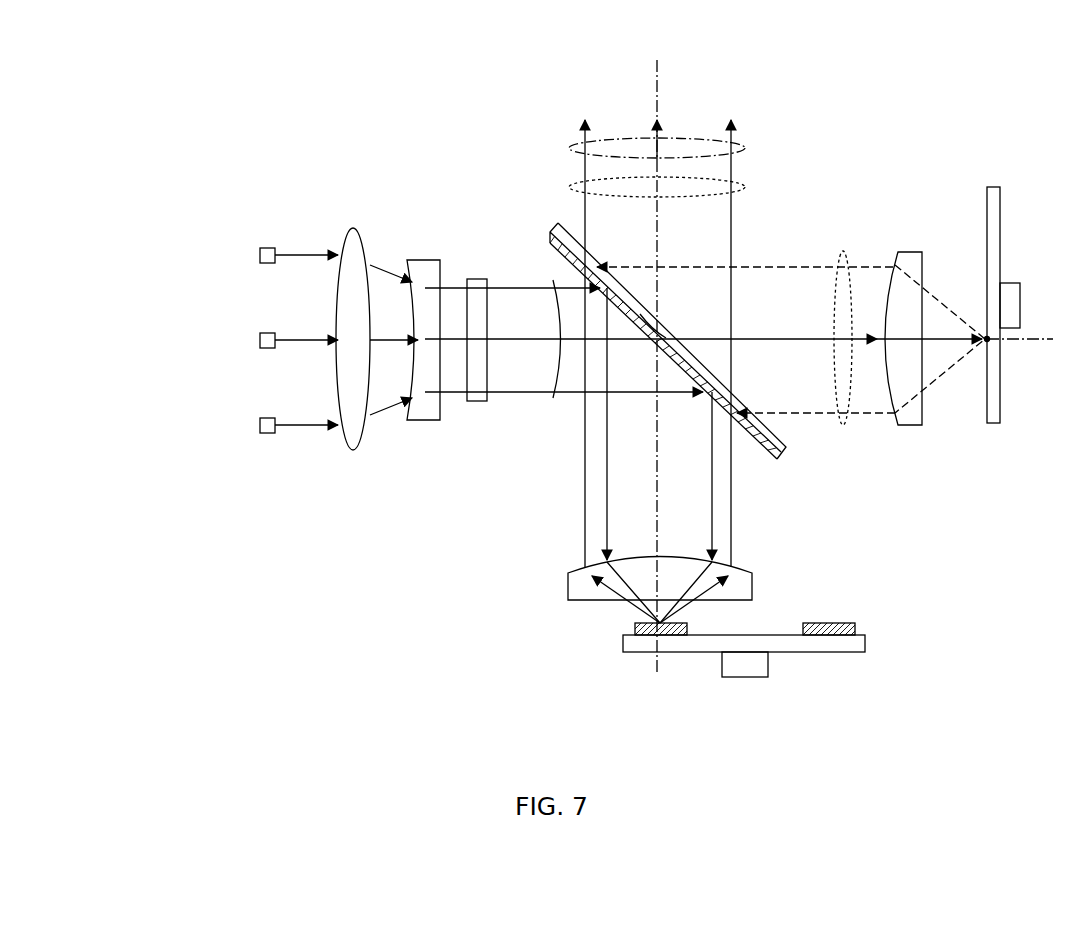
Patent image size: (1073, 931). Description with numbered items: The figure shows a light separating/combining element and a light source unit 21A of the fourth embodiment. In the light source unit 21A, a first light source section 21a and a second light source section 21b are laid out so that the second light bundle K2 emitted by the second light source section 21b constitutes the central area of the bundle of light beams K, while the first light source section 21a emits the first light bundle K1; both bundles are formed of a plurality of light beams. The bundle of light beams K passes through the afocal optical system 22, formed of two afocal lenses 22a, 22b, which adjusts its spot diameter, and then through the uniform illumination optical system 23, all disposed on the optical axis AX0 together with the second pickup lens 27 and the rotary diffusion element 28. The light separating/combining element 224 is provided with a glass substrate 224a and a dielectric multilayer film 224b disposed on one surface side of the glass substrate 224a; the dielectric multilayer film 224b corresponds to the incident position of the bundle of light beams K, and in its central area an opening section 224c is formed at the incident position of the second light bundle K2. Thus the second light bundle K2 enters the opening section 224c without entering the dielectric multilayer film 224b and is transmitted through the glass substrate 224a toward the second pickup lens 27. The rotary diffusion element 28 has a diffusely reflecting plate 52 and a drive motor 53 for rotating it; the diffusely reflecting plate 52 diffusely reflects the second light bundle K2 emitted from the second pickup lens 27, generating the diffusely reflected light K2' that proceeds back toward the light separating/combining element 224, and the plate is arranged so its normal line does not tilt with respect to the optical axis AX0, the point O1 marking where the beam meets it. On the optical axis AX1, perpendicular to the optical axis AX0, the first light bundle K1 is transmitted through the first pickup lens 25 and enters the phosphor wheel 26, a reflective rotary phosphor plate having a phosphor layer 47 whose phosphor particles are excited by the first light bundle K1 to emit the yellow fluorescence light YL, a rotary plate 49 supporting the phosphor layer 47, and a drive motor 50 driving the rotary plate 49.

The light source unit 21A is at (148, 253).
The first light source section 21a is at (250, 258).
The second light source section 21b is at (250, 342).
The afocal optical system 22 is at (440, 548).
The afocal lens 22a is at (358, 445).
The afocal lens 22b is at (425, 420).
The uniform illumination optical system 23 is at (480, 402).
The first light bundle K1 is at (498, 287).
The second light bundle K2 is at (703, 288).
The bundle of light beams K is at (563, 397).
The light separating/combining element 224 is at (789, 462).
The glass substrate 224a is at (783, 438).
The dielectric multilayer film 224b is at (767, 458).
The opening section 224c is at (668, 330).
The optical axis AX1 is at (660, 85).
The optical axis AX0 is at (1032, 340).
The yellow fluorescence light YL is at (745, 143).
The diffusely reflected light K2' is at (777, 290).
The second pickup lens 27 is at (906, 257).
The rotary diffusion element 28 is at (1001, 178).
The diffusely reflecting plate 52 is at (995, 200).
The drive motor 53 is at (1015, 295).
The focal point O1 is at (983, 345).
The first pickup lens 25 is at (597, 598).
The phosphor wheel 26 is at (885, 639).
The phosphor layer 47 is at (835, 622).
The rotary plate 49 is at (840, 647).
The drive motor 50 is at (740, 670).